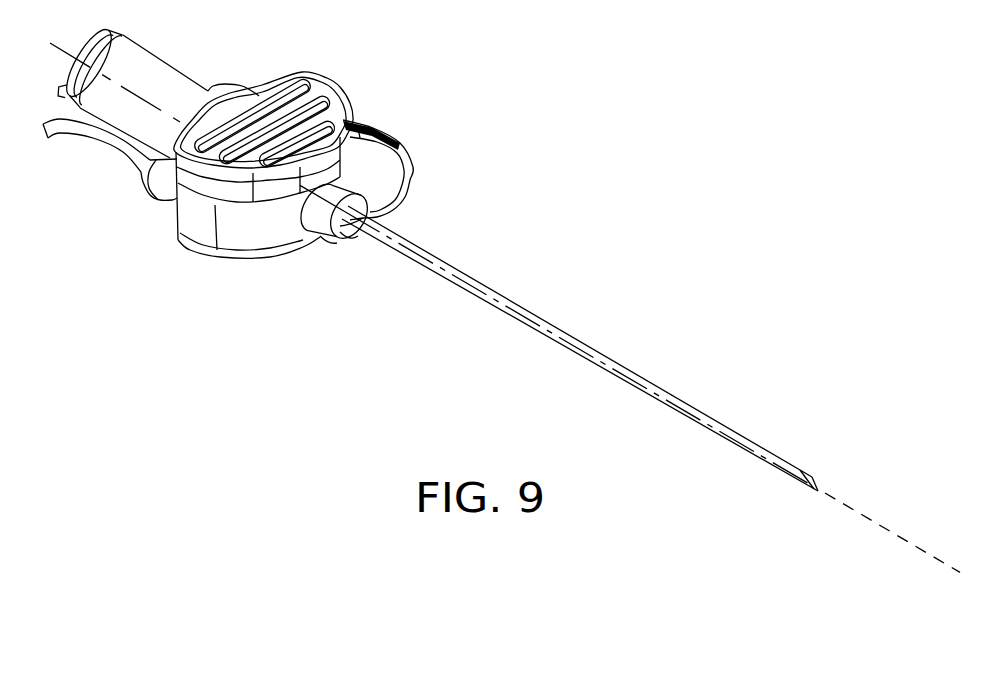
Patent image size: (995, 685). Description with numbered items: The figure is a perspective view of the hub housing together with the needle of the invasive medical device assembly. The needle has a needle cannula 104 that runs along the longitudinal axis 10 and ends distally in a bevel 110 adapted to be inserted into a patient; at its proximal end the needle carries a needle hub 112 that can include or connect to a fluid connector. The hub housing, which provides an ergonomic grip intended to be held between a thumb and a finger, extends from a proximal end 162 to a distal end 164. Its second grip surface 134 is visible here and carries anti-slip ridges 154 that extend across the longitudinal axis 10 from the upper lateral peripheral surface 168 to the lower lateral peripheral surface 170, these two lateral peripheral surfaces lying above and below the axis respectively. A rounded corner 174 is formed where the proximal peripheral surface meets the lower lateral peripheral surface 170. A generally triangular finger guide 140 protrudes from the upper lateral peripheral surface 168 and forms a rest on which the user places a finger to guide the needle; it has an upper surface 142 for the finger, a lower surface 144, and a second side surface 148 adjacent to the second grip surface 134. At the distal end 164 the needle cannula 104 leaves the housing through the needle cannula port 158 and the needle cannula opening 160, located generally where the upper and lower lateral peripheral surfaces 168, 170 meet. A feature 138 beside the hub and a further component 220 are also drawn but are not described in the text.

The longitudinal axis 10 is at (881, 514).
The needle cannula 104 is at (620, 372).
The bevel 110 is at (818, 482).
The needle hub 112 is at (143, 68).
The second grip surface 134 is at (290, 93).
The side port lug 138 is at (158, 176).
The finger guide 140 is at (390, 122).
The upper surface 142 is at (391, 137).
The lower surface 144 is at (403, 205).
The second side surface 148 is at (357, 124).
The anti-slip ridges 154 is at (262, 162).
The needle cannula port 158 is at (326, 214).
The needle cannula opening 160 is at (355, 243).
The proximal end 162 is at (251, 77).
The distal end 164 is at (336, 252).
The upper lateral peripheral surface 168 is at (338, 87).
The lower lateral peripheral surface 170 is at (248, 233).
The rounded corner 174 is at (176, 222).
The extension tube 220 is at (101, 142).